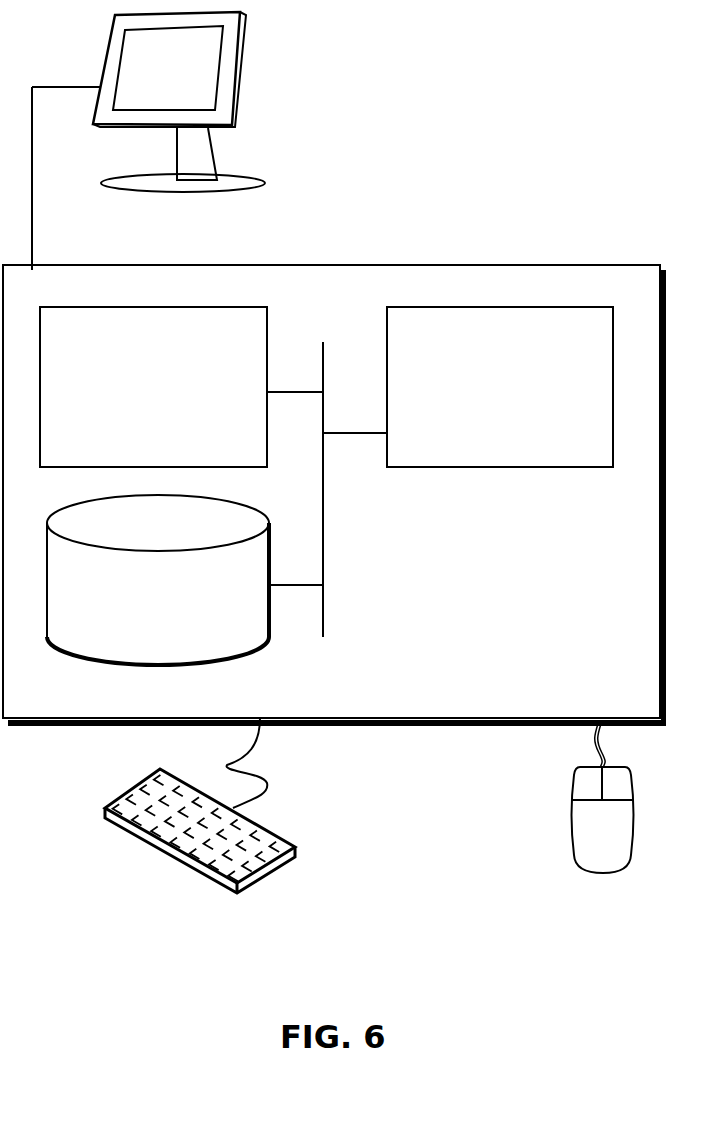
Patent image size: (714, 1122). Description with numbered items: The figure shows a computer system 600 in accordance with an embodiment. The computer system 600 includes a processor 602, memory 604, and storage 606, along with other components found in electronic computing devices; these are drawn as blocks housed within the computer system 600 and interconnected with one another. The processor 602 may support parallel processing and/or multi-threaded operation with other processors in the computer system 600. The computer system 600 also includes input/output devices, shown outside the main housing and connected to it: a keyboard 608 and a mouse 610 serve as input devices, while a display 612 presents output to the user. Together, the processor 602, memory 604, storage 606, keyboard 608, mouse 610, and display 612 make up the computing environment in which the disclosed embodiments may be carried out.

The computer system 600 is at (377, 243).
The processor 602 is at (526, 399).
The memory 604 is at (176, 399).
The storage 606 is at (180, 611).
The keyboard 608 is at (122, 832).
The mouse 610 is at (624, 841).
The display 612 is at (148, 141).